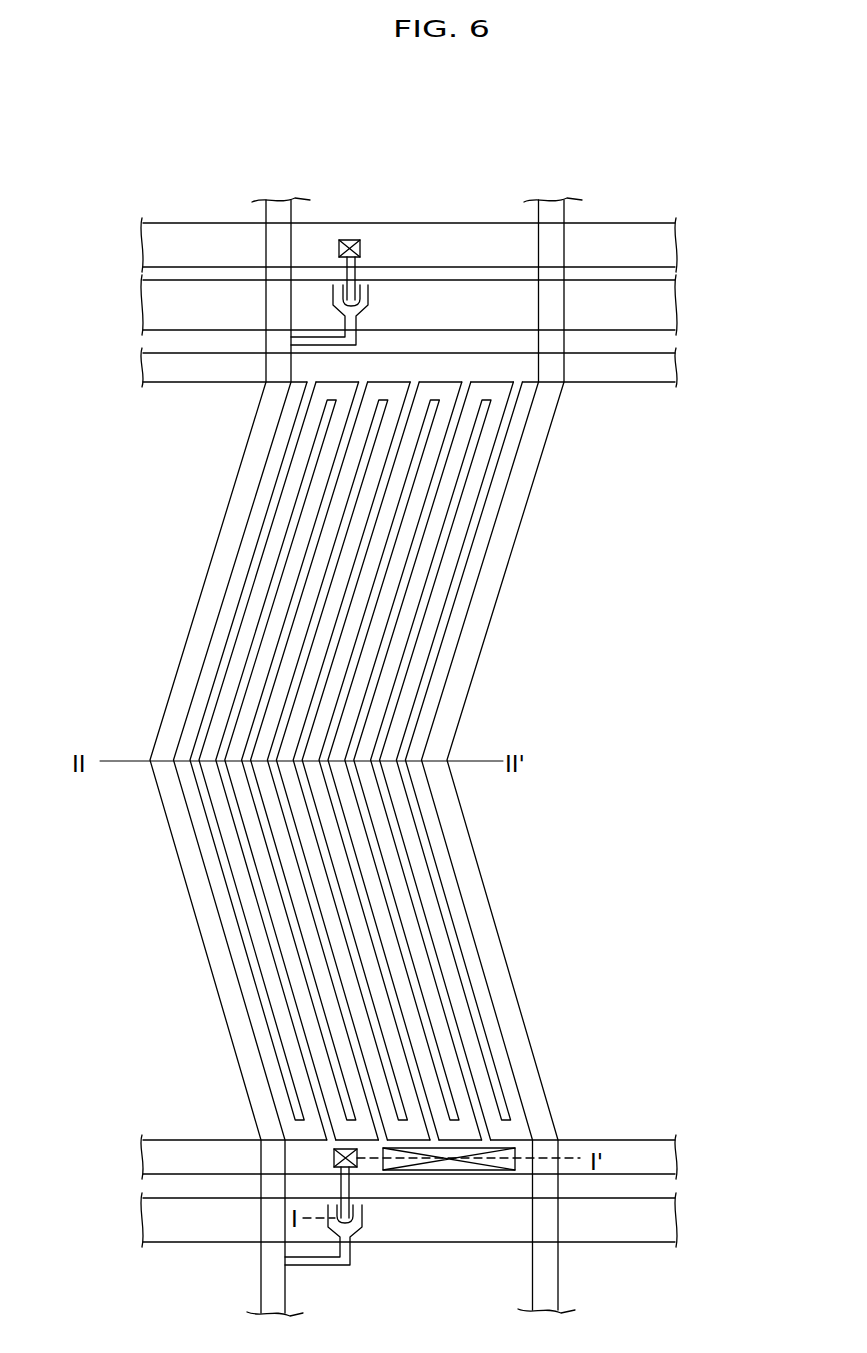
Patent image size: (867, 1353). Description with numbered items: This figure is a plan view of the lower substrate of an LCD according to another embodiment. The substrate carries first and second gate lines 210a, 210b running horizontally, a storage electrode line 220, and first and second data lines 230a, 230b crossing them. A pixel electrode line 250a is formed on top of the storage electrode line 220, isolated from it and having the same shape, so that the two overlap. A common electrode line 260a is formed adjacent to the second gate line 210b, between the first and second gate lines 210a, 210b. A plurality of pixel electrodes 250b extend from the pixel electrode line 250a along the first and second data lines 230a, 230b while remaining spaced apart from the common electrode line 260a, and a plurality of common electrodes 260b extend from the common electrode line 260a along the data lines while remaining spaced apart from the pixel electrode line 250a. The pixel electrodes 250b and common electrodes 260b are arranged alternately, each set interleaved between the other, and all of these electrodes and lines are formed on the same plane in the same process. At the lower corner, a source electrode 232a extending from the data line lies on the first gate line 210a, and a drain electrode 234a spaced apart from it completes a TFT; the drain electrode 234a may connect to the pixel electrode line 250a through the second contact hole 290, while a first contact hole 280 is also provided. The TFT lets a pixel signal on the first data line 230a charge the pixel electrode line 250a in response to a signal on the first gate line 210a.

The first gate line 210a is at (670, 1220).
The second gate line 210b is at (670, 316).
The storage electrode line 220 is at (670, 1160).
The first data line 230a is at (275, 200).
The second data line 230b is at (550, 200).
The source electrode 232a is at (333, 1230).
The drain electrode 234a is at (332, 1200).
The pixel electrode line 250a is at (524, 1147).
The pixel electrodes 250b is at (315, 1087).
The common electrode line 260a is at (670, 375).
The common electrodes 260b is at (293, 437).
The first contact hole 280 is at (465, 1170).
The second contact hole 290 is at (357, 1163).